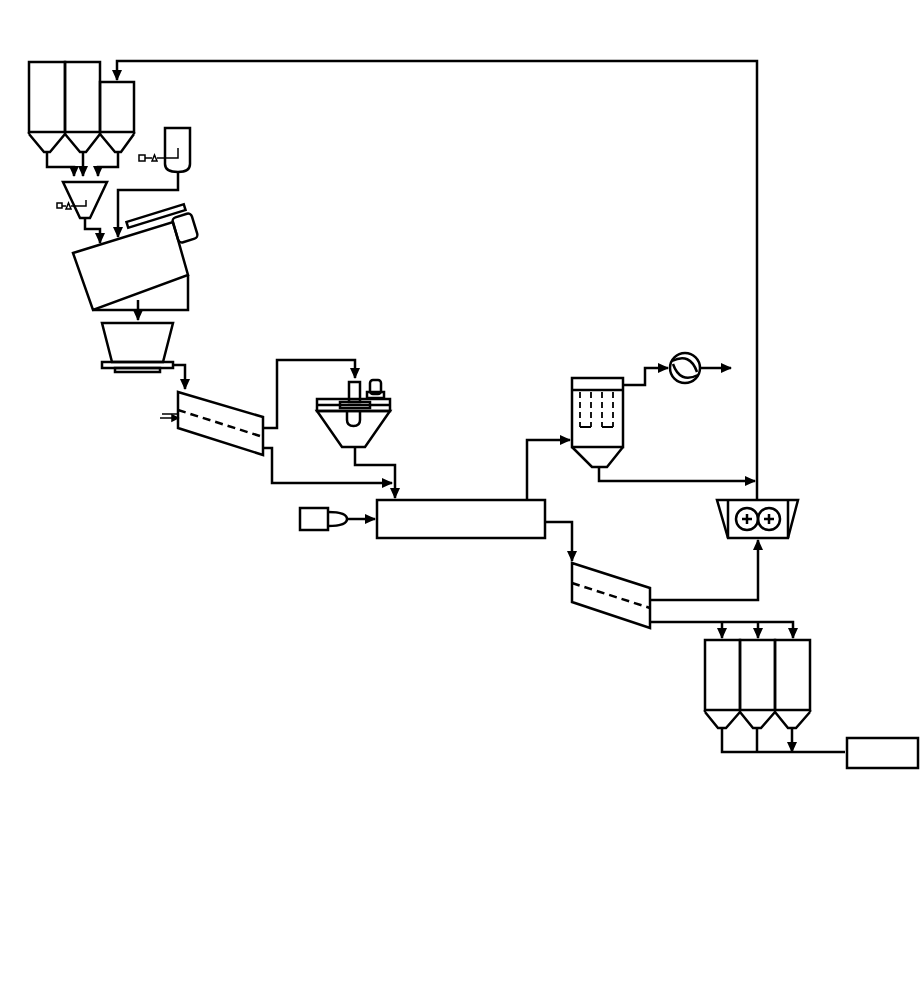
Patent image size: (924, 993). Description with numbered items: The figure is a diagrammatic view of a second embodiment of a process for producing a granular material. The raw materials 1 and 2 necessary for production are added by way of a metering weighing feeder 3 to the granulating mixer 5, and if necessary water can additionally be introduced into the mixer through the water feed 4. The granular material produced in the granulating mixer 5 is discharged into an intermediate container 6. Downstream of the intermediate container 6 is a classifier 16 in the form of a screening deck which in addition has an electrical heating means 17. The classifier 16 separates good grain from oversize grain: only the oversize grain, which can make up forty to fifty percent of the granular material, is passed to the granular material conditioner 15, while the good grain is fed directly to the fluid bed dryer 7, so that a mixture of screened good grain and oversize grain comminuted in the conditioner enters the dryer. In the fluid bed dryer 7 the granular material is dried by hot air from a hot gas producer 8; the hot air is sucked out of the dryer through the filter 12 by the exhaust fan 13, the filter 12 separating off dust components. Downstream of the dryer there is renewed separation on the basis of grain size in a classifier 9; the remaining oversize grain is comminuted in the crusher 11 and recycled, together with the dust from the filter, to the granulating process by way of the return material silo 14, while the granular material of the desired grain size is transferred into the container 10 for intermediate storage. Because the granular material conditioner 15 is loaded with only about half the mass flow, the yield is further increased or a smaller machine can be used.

The raw material 1 is at (46, 63).
The raw material 2 is at (78, 63).
The metering weighing feeder 3 is at (78, 191).
The water feed 4 is at (180, 140).
The granulating mixer 5 is at (100, 277).
The intermediate container 6 is at (118, 342).
The fluid bed dryer 7 is at (437, 532).
The hot gas producer 8 is at (315, 525).
The classifier 9 is at (608, 608).
The container 10 is at (807, 678).
The crusher 11 is at (793, 527).
The filter 12 is at (615, 435).
The exhaust fan 13 is at (682, 352).
The return material silo 14 is at (125, 123).
The granular material conditioner 15 is at (367, 423).
The classifier 16 is at (213, 428).
The electrical heating means 17 is at (168, 422).